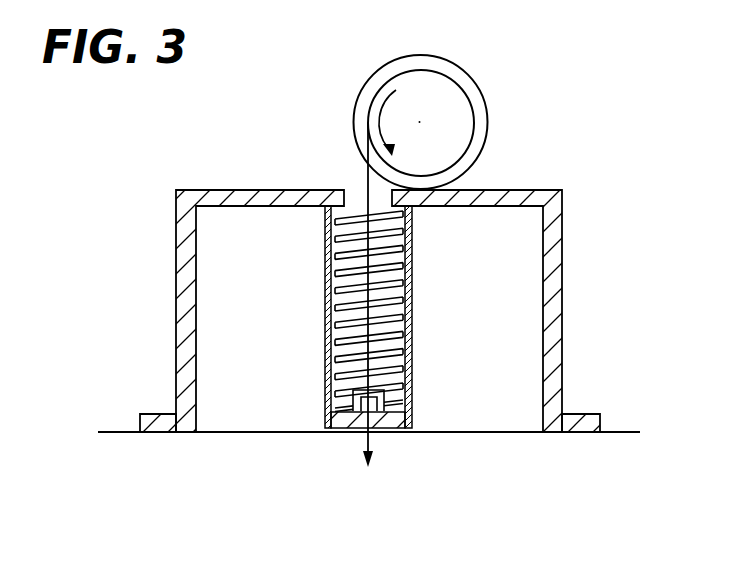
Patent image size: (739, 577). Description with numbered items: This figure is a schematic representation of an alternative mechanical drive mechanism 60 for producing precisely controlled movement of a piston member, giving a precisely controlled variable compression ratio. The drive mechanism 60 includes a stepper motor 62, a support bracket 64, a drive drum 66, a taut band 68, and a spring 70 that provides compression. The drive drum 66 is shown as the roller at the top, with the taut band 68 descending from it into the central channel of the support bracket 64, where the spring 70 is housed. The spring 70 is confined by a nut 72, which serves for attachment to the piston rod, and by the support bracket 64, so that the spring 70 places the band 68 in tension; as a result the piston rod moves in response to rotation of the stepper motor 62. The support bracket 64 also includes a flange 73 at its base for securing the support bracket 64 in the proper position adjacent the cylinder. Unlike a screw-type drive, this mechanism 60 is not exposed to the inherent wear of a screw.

The mechanical drive mechanism 60 is at (140, 167).
The stepper motor 62 is at (483, 84).
The support bracket 64 is at (566, 190).
The drive drum 66 is at (478, 122).
The taut band 68 is at (365, 173).
The spring 70 is at (415, 258).
The nut 72 is at (372, 435).
The flange 73 is at (604, 430).